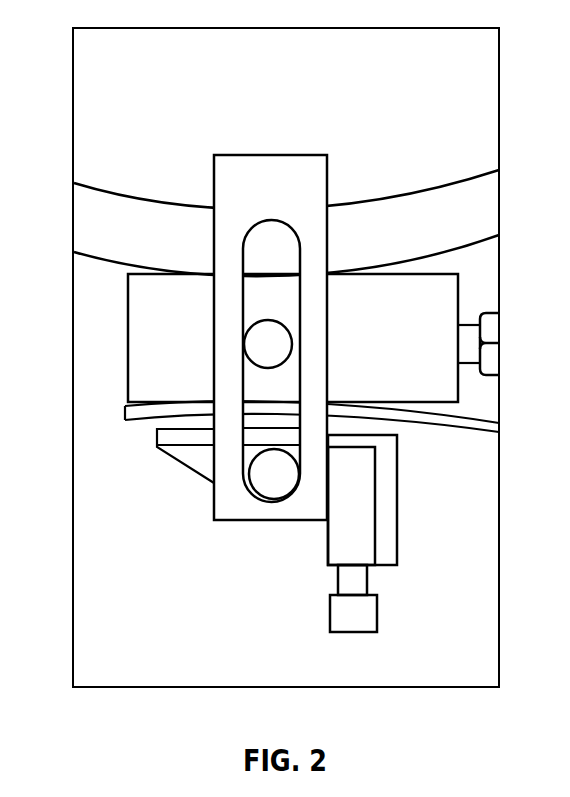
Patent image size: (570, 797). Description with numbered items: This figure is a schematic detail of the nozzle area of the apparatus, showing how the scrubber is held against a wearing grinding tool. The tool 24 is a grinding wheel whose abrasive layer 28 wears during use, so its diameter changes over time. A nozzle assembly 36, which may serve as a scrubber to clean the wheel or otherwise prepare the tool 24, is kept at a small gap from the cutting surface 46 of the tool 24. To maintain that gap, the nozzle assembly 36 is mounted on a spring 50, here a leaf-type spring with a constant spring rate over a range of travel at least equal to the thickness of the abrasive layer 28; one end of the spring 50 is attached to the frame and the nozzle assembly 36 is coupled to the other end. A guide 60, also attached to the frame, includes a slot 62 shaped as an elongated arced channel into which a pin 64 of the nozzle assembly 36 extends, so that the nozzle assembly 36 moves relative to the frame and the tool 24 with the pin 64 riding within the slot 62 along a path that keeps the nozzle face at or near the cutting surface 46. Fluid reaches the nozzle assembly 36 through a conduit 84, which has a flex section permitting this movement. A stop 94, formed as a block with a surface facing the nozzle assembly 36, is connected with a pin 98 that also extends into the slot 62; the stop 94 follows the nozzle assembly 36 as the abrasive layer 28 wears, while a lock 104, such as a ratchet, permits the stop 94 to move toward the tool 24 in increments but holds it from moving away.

The tool 24 is at (94, 259).
The abrasive layer 28 is at (96, 239).
The nozzle assembly 36 is at (384, 359).
The cutting surface 46 is at (120, 266).
The spring 50 is at (428, 421).
The guide 60 is at (327, 170).
The slot 62 is at (291, 388).
The pin 64 is at (278, 335).
The conduit 84 is at (492, 313).
The stop 94 is at (392, 527).
The pin 98 is at (275, 488).
The lock 104 is at (377, 613).